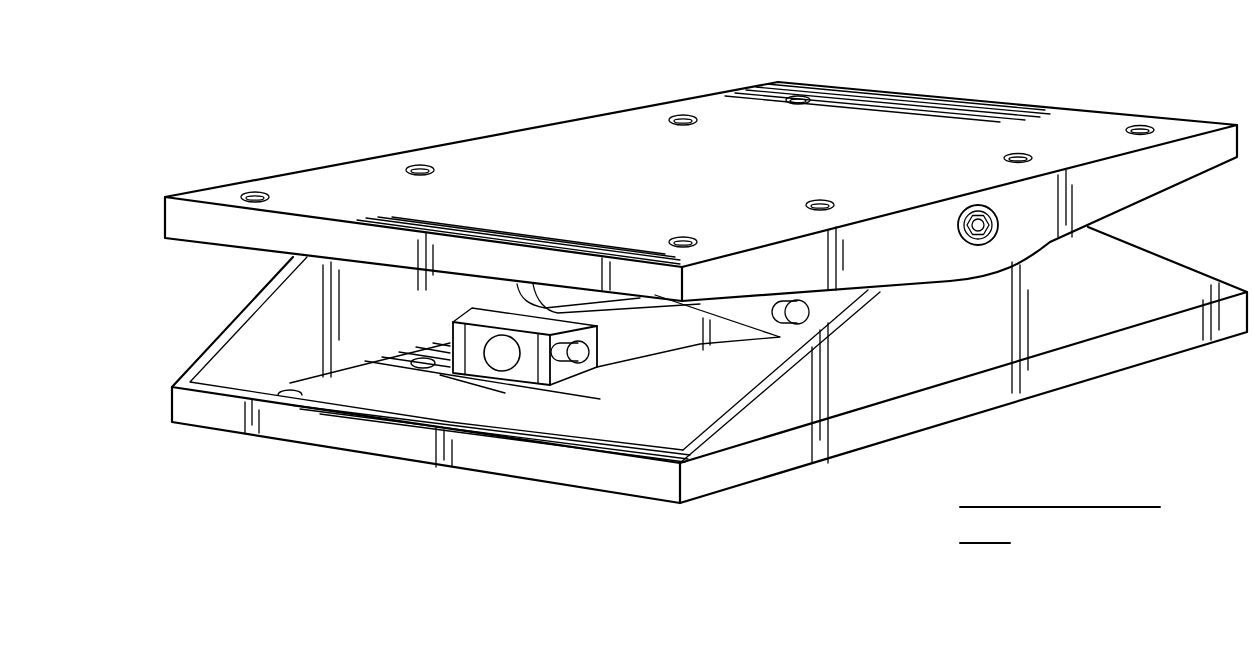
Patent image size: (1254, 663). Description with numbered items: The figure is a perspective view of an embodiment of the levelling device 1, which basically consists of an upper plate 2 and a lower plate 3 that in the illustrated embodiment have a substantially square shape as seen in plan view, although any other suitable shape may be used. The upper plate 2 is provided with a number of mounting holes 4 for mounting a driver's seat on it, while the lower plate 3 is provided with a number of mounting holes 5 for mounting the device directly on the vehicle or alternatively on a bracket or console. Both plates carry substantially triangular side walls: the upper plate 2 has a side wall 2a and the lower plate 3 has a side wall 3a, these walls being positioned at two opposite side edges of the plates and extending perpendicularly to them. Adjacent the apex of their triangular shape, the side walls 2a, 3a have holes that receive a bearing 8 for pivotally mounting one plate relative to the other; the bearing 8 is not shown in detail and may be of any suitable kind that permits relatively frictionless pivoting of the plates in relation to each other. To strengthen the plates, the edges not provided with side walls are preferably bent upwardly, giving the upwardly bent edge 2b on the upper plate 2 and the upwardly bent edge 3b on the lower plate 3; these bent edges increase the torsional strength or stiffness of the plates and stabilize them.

The levelling device 1 is at (200, 320).
The upper plate 2 is at (565, 165).
The side wall of upper plate 2a is at (1167, 162).
The upwardly bent edge of upper plate 2b is at (335, 230).
The lower plate 3 is at (647, 427).
The side wall of lower plate 3a is at (852, 435).
The upwardly bent edge of lower plate 3b is at (513, 453).
The mounting holes 4 is at (255, 193).
The mounting holes 5 is at (423, 370).
The bearing 8 is at (987, 213).